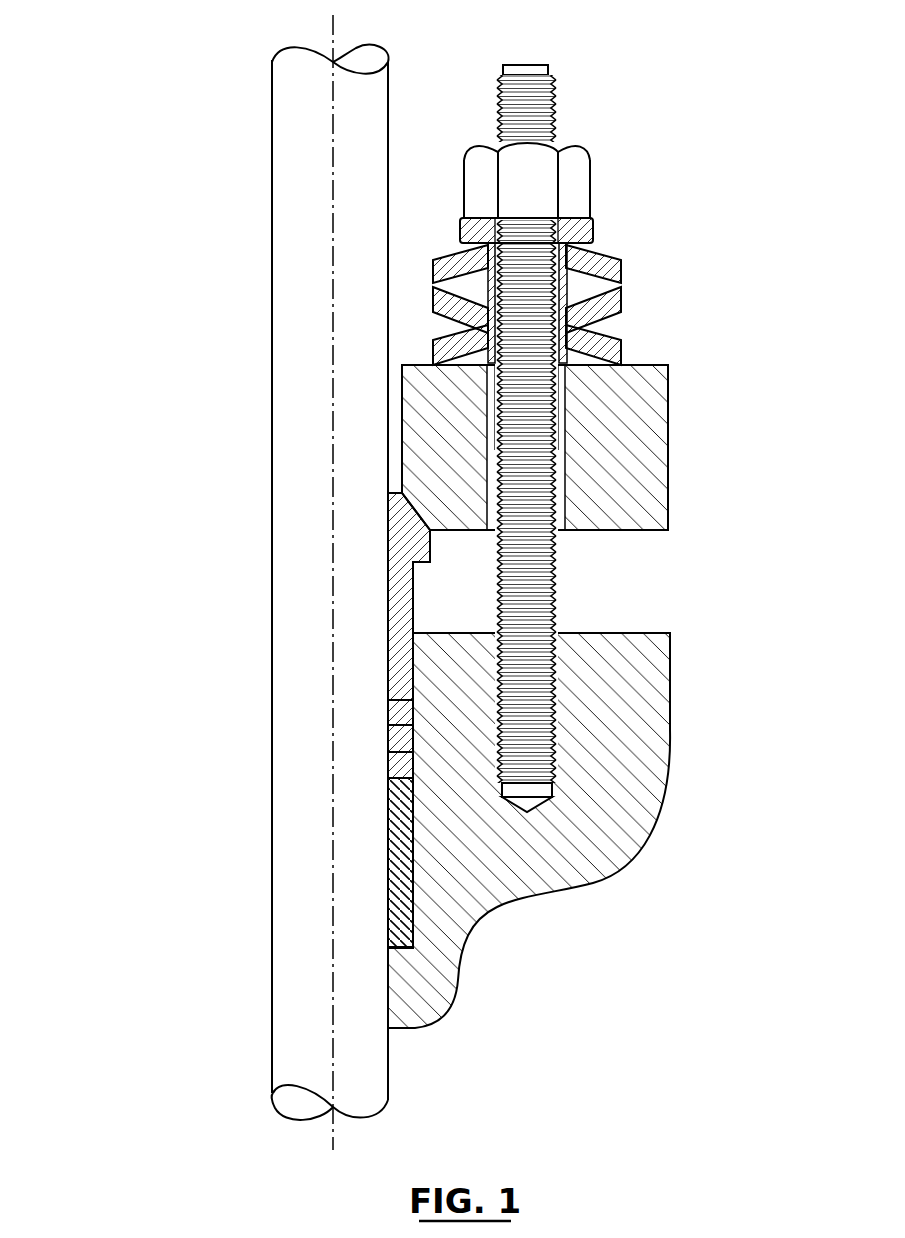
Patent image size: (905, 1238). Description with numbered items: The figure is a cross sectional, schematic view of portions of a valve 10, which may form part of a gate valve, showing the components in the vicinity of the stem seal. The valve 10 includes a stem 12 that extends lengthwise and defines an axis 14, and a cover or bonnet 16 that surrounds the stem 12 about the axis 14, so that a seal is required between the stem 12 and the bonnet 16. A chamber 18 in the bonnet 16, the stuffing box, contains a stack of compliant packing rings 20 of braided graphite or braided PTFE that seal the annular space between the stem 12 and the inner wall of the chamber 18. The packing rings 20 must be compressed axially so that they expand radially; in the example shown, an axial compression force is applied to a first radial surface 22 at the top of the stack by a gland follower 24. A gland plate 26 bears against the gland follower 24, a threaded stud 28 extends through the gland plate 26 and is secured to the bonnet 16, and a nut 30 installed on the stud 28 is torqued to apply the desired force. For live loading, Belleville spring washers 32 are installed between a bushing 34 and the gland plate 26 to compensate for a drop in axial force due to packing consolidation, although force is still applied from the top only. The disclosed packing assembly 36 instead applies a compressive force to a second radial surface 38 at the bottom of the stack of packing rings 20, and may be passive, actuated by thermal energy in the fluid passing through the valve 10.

The valve 10 is at (185, 225).
The stem 12 is at (293, 350).
The axis 14 is at (333, 427).
The bonnet 16 is at (630, 705).
The chamber 18 is at (420, 737).
The packing ring 20 is at (390, 758).
The first radial surface 22 is at (402, 698).
The gland follower 24 is at (400, 600).
The gland plate 26 is at (625, 453).
The threaded stud 28 is at (553, 124).
The nut 30 is at (573, 180).
The Belleville spring washers 32 is at (627, 288).
The bushing 34 is at (580, 230).
The packing assembly 36 is at (385, 862).
The second radial surface 38 is at (405, 782).